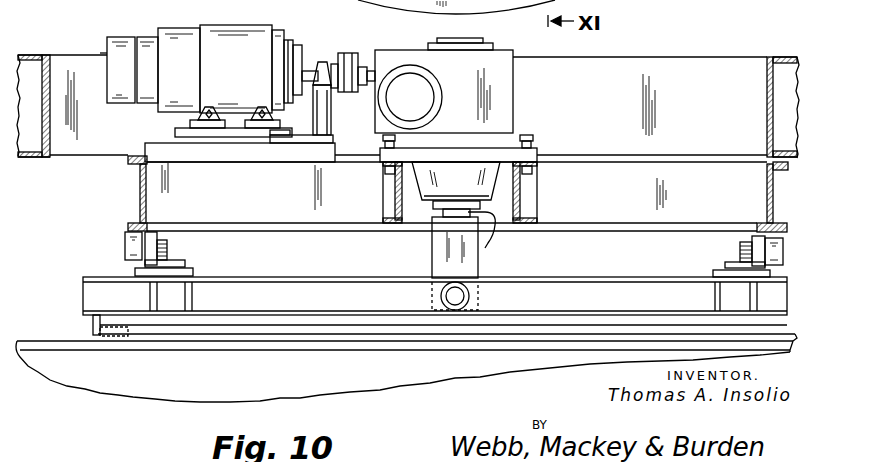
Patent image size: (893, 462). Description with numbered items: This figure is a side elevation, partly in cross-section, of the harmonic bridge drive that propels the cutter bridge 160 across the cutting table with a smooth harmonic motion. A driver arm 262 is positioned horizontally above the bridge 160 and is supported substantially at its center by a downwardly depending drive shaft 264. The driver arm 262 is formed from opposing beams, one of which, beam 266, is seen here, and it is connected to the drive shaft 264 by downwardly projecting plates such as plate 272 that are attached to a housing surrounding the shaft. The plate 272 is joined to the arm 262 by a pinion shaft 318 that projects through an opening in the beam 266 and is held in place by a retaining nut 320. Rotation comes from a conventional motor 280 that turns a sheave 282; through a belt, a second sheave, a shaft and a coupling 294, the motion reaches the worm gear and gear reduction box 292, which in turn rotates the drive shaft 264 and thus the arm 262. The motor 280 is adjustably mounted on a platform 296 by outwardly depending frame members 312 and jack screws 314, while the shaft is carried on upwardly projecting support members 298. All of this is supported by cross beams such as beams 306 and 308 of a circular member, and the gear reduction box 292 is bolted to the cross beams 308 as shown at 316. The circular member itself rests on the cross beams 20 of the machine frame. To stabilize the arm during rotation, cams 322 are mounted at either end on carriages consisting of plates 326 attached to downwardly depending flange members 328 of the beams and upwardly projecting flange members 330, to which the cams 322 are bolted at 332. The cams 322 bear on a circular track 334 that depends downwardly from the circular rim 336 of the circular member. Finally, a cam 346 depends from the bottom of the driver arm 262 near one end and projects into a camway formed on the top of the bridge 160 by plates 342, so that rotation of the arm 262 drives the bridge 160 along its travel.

The cross beams 20 is at (52, 70).
The cutter bridge 160 is at (132, 388).
The driver arm 262 is at (618, 273).
The drive shaft 264 is at (500, 237).
The beam 266 is at (351, 262).
The downwardly projecting plate 272 is at (432, 247).
The motor 280 is at (255, 30).
The sheave 282 is at (290, 40).
The gear reduction box 292 is at (412, 50).
The coupling 294 is at (355, 52).
The platform 296 is at (250, 133).
The support member 298 is at (328, 103).
The cross beam 306 is at (157, 190).
The cross beam 308 is at (395, 183).
The frame member 312 is at (197, 120).
The jack screw 314 is at (203, 133).
The bolt 316 is at (532, 140).
The pinion shaft 318 is at (467, 295).
The retaining nut 320 is at (447, 295).
The cam 322 is at (125, 252).
The plate 326 is at (193, 272).
The downwardly depending flange member 328 is at (195, 298).
The upwardly projecting flange member 330 is at (163, 247).
The bolt 332 is at (167, 243).
The circular track 334 is at (135, 226).
The circular rim 336 is at (140, 173).
The plate 342 is at (183, 332).
The cam 346 is at (97, 323).